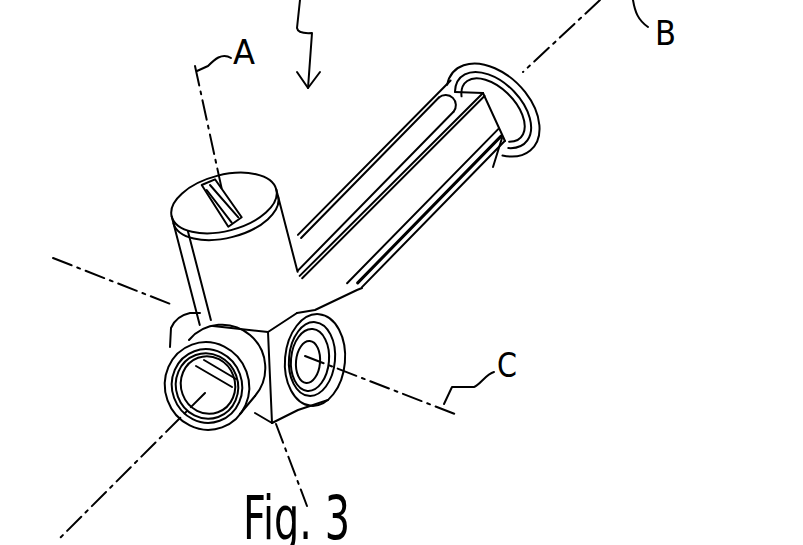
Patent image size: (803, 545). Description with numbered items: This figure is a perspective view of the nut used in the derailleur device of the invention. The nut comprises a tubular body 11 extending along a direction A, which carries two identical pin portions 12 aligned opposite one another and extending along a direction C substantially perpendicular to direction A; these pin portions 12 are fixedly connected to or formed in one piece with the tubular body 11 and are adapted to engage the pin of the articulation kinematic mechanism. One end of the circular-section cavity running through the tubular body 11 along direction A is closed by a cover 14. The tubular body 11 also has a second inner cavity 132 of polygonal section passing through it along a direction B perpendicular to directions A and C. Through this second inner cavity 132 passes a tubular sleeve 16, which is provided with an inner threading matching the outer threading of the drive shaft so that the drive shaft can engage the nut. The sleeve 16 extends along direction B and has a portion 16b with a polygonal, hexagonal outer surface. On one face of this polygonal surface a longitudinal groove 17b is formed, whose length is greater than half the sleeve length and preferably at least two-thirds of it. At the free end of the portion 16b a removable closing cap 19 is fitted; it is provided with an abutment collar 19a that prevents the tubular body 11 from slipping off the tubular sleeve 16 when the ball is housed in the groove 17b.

The tubular body 11 is at (357, 297).
The pin portions 12 is at (167, 328).
The cover 14 is at (193, 210).
The tubular sleeve 16 is at (467, 211).
The portion with polygonal outer surface 16b is at (408, 242).
The longitudinal groove 17b is at (414, 137).
The removable closing cap 19 is at (528, 138).
The abutment collar 19a is at (498, 163).
The second inner cavity 132 is at (204, 459).